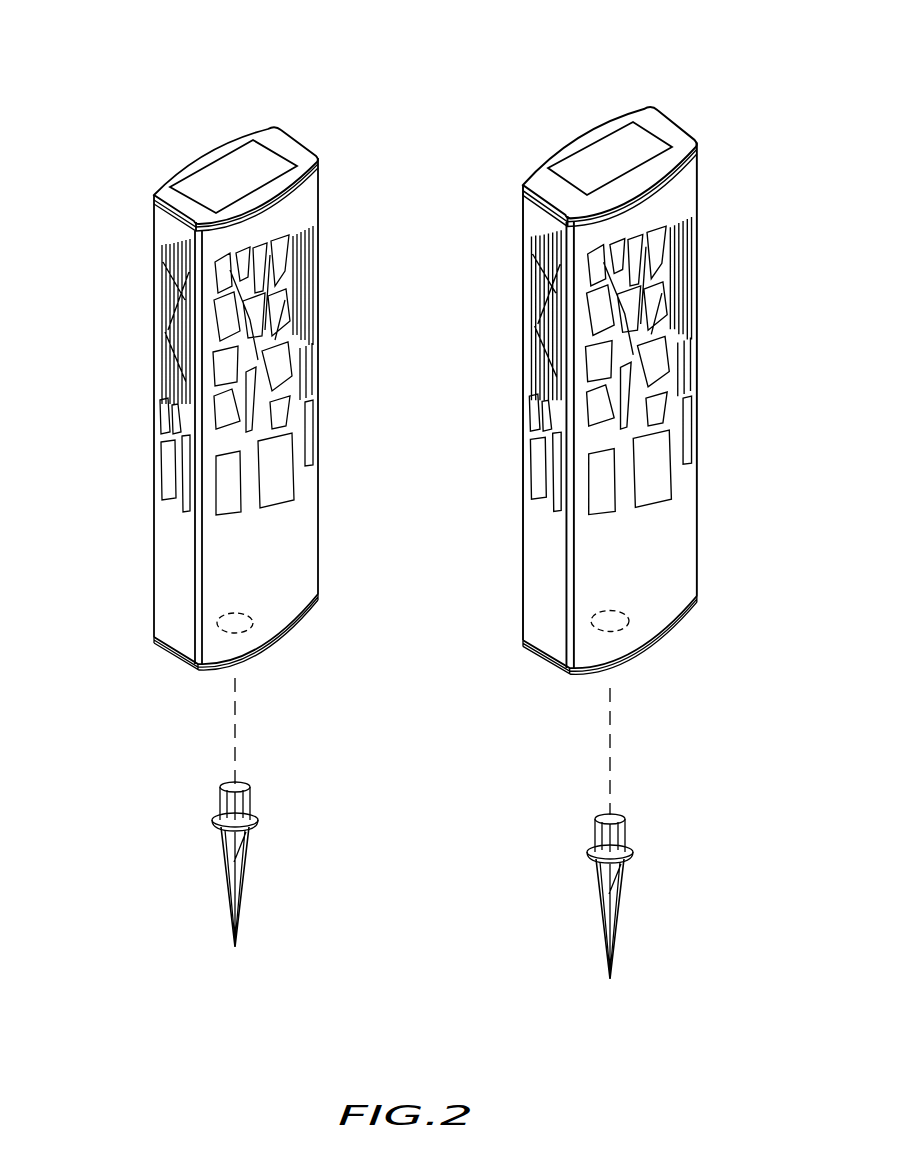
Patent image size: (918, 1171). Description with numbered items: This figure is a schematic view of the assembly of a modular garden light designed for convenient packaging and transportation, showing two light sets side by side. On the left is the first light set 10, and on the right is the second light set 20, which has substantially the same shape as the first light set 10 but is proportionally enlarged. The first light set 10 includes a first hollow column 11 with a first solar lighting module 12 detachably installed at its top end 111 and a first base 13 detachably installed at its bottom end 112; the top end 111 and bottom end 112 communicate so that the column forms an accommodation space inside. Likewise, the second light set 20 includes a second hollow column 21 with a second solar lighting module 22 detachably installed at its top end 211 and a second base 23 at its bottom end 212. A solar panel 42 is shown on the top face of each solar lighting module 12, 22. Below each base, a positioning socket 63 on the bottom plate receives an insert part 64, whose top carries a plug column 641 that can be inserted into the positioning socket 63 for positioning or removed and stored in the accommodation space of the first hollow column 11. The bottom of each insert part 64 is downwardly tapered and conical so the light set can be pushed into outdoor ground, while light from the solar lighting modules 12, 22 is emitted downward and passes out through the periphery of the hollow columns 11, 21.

The first light set 10 is at (234, 357).
The first hollow column 11 is at (241, 416).
The top end 111 is at (320, 186).
The bottom end 112 is at (320, 565).
The first solar lighting module 12 is at (168, 165).
The first base 13 is at (160, 655).
The solar panel 42 is at (228, 148).
The positioning socket 63 is at (253, 627).
The insert part 64 is at (415, 828).
The plug column 641 is at (252, 801).
The second light set 20 is at (615, 340).
The second hollow column 21 is at (615, 411).
The top end 211 is at (523, 213).
The bottom end 212 is at (523, 598).
The second solar lighting module 22 is at (673, 118).
The second base 23 is at (700, 628).